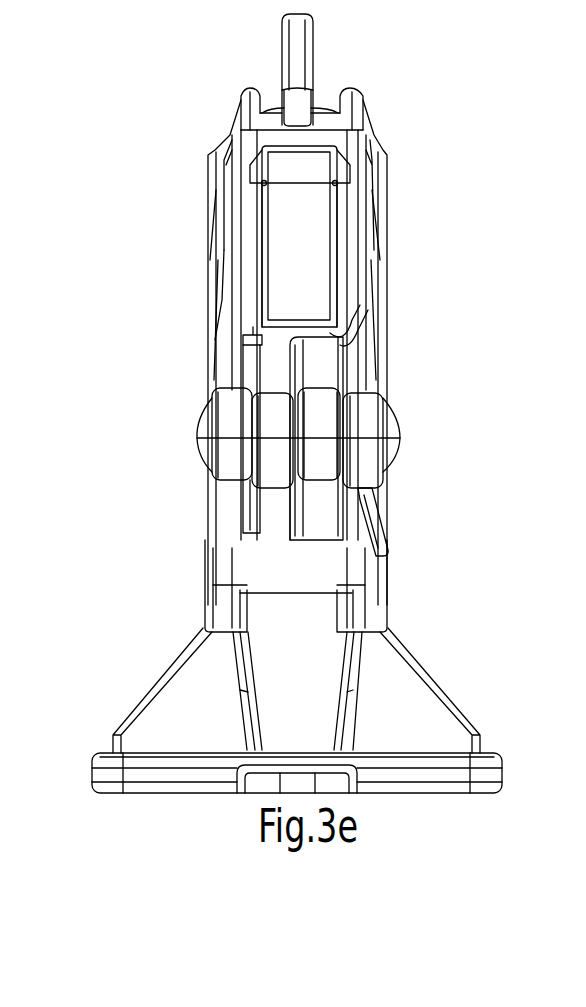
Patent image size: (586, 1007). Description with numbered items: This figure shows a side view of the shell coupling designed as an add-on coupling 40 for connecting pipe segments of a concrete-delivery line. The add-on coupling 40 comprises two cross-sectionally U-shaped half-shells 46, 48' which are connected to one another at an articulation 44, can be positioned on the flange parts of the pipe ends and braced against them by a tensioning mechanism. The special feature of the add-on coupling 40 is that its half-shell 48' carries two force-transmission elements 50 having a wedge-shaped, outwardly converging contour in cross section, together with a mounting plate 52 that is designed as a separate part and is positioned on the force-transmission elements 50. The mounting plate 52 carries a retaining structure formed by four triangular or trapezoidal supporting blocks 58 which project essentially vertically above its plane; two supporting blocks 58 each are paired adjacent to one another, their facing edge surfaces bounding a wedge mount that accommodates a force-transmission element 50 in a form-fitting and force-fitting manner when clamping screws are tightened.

The add-on coupling 40 is at (403, 245).
The articulation 44 is at (402, 438).
The half-shell 46 is at (362, 196).
The half-shell 48' is at (441, 430).
The force-transmission element 50 is at (318, 620).
The mounting plate 52 is at (173, 782).
The supporting block 58 is at (183, 690).